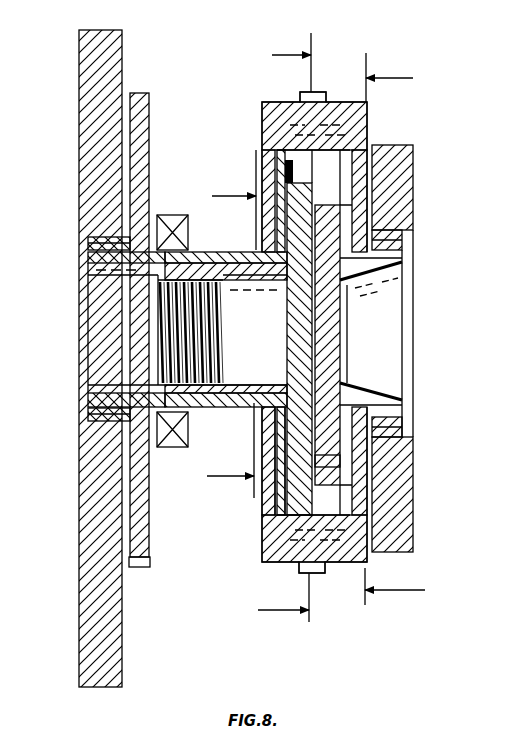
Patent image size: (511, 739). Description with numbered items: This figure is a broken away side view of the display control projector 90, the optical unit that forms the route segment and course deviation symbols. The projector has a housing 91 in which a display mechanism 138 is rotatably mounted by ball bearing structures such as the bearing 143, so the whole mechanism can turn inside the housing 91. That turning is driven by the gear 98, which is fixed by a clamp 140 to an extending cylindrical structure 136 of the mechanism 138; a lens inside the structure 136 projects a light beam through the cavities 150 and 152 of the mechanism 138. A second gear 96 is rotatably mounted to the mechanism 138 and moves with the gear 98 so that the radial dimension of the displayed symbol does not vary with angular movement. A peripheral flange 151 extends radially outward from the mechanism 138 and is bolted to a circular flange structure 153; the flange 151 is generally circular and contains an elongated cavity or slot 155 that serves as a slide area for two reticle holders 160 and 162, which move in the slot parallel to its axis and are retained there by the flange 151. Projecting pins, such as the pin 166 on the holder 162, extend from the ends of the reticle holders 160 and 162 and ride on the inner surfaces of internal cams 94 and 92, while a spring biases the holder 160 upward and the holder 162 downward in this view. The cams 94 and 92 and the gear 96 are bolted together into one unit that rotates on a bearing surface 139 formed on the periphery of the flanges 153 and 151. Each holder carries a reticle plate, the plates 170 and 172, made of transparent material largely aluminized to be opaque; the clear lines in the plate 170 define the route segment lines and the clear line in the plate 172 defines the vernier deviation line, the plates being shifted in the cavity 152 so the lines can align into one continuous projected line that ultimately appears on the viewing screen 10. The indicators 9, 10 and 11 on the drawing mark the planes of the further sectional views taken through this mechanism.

The section line 9- 9 is at (284, 335).
The viewing screen 10 is at (395, 336).
The section line 11- 11 is at (231, 324).
The display control projector 90 is at (75, 362).
The housing 91 is at (118, 70).
The internal cam 92 is at (362, 172).
The internal cam 94 is at (272, 150).
The gear 96 is at (325, 573).
The gear 98 is at (140, 567).
The extending cylindrical structure 136 is at (225, 408).
The display mechanism 138 is at (227, 252).
The bearing surface 139 is at (262, 128).
The clamp 140 is at (172, 447).
The ball bearing structure 143 is at (408, 237).
The cavity 150 is at (150, 320).
The peripheral flange 151 is at (360, 282).
The cavity 152 is at (258, 290).
The circular flange structure 153 is at (282, 168).
The elongated cavity or slot 155 is at (335, 388).
The reticle holder 160 is at (262, 487).
The reticle holder 162 is at (325, 458).
The projecting pin 166 is at (358, 210).
The reticle plate 170 is at (330, 334).
The reticle plate 172 is at (290, 330).